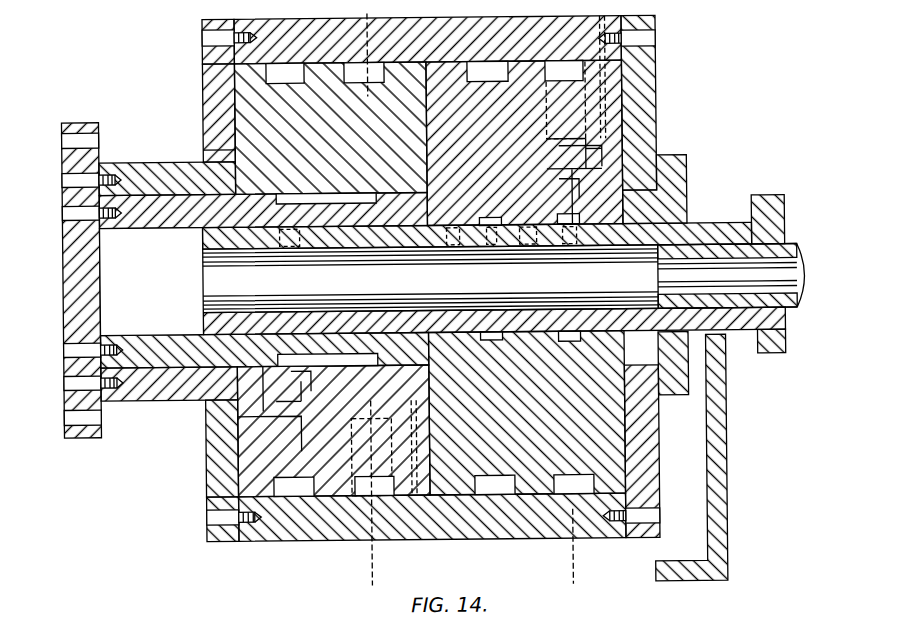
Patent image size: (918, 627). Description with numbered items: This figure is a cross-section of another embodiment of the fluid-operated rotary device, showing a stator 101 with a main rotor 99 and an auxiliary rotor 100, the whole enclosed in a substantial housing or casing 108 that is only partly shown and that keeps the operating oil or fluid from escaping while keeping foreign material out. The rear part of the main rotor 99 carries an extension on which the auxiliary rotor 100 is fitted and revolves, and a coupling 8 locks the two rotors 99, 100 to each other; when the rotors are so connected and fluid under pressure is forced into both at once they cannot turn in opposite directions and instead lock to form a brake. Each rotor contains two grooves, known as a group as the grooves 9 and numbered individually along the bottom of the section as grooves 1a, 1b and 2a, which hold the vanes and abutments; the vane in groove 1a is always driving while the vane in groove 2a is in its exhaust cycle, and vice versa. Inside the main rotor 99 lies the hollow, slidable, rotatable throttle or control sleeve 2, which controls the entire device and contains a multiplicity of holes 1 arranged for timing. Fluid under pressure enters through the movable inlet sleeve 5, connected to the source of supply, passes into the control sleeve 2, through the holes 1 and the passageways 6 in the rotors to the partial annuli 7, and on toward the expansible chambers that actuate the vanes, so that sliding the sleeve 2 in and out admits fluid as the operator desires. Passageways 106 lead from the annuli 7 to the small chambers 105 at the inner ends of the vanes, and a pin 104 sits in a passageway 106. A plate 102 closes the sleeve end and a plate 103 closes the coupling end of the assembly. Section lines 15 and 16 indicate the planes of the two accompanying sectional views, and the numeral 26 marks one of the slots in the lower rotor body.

The holes 1 is at (290, 232).
The groove 1a is at (580, 486).
The groove 1b is at (370, 486).
The throttle or control sleeve 2 is at (783, 203).
The groove 2a is at (492, 486).
The movable inlet sleeve 5 is at (790, 250).
The passageway 6 is at (355, 250).
The partial annuli 7 is at (235, 138).
The coupling 8 is at (80, 436).
The grooves 9 is at (358, 82).
The section line 15 is at (550, 588).
The section line 16 is at (340, 15).
The slot 26 is at (300, 500).
The main rotor 99 is at (455, 92).
The auxiliary rotor 100 is at (245, 88).
The stator 101 is at (285, 543).
The plate on the sleeve end 102 is at (645, 105).
The plate on the coupling end 103 is at (215, 96).
The pin 104 is at (590, 170).
The small chamber 105 is at (598, 140).
The passageways 106 is at (575, 186).
The housing or casing 108 is at (718, 525).